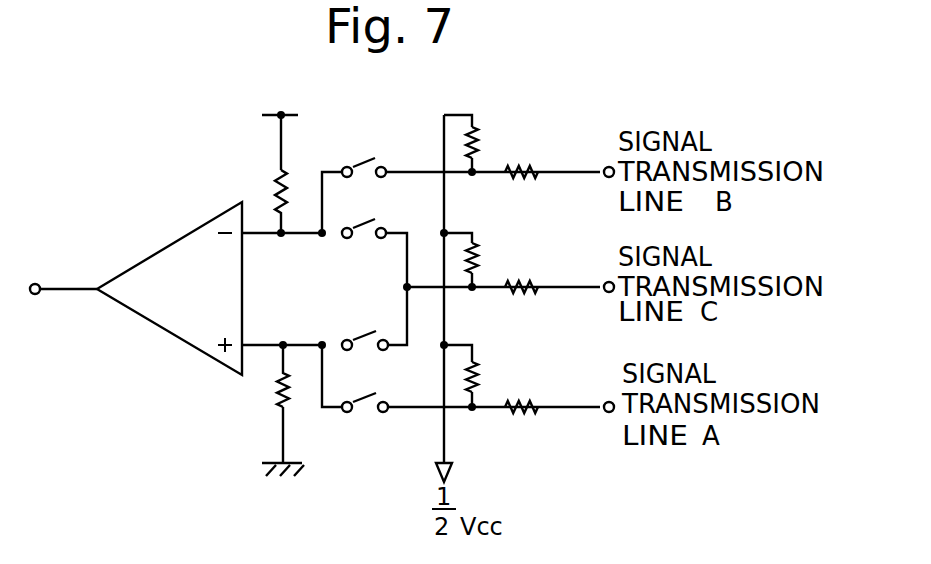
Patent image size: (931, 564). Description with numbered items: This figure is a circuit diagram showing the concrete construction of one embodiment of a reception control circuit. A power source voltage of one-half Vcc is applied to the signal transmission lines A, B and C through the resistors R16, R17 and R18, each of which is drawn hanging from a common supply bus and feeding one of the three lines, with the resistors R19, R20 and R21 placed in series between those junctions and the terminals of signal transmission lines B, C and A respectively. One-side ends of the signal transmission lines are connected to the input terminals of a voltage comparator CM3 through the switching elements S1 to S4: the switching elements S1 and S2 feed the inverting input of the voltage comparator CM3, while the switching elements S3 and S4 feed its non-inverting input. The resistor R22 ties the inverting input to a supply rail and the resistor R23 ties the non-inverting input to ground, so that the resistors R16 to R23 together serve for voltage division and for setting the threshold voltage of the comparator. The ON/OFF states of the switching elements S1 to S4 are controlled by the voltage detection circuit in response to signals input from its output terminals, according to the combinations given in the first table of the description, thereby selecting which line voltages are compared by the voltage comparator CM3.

The voltage comparator CM3 is at (154, 325).
The resistor R16 is at (495, 137).
The resistor R17 is at (495, 252).
The resistor R18 is at (495, 370).
The resistor R19 is at (535, 156).
The resistor R20 is at (535, 271).
The resistor R21 is at (536, 391).
The resistor R22 is at (258, 197).
The resistor R23 is at (260, 386).
The switching element S1 is at (364, 152).
The switching element S2 is at (364, 214).
The switching element S3 is at (365, 326).
The switching element S4 is at (365, 390).